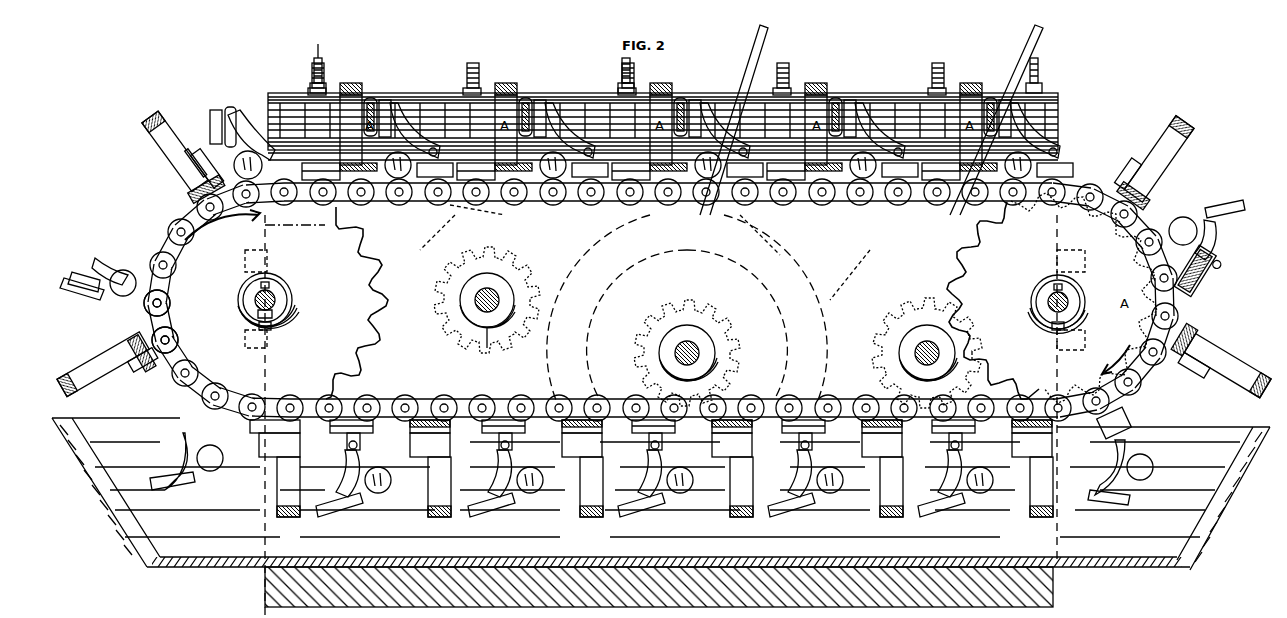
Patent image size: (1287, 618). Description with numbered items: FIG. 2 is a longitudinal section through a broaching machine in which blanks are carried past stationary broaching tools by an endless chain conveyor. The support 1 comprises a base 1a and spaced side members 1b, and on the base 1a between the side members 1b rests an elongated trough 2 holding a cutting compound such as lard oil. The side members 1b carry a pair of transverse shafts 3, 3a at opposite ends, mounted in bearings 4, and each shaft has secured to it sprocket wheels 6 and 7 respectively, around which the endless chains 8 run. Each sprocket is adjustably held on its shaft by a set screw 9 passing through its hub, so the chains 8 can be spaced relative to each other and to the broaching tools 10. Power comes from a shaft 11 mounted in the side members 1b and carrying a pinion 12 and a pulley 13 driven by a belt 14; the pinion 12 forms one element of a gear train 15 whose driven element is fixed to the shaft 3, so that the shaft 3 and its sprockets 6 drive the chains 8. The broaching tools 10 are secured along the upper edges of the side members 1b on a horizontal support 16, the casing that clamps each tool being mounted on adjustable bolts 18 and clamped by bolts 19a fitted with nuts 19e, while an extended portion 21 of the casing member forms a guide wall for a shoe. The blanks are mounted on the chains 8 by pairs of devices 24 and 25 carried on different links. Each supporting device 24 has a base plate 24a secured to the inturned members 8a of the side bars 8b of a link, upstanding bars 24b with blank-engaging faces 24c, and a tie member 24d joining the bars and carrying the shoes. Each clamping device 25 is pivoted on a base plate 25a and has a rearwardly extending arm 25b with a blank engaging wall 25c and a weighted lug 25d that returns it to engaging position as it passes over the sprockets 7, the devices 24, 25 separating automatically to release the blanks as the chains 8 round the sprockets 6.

The support 1 is at (596, 590).
The base 1a is at (110, 581).
The side members 1b is at (280, 537).
The trough or receptacle 2 is at (205, 570).
The transverse shaft 3 is at (1040, 306).
The transverse shaft 3a is at (290, 305).
The bearings 4 is at (248, 310).
The sprocket wheels 6 is at (945, 282).
The sprocket wheels 7 is at (358, 278).
The endless chains 8 is at (615, 400).
The inturned members 8a is at (172, 330).
The side bars 8b is at (172, 300).
The set screw 9 is at (270, 332).
The broaching tool 10 is at (440, 110).
The shaft 11 is at (611, 353).
The pinion 12 is at (475, 300).
The power element 13 is at (400, 362).
The belt 14 is at (712, 100).
The gear train 15 is at (565, 258).
The horizontal support 16 is at (470, 210).
The bolts 18 is at (645, 257).
The bolts 19a is at (940, 72).
The nut 19e is at (968, 83).
The extended portion 21 is at (575, 100).
The supporting device 24 is at (165, 165).
The base plate 24a is at (185, 190).
The upstanding bars 24b is at (110, 378).
The faces 24c is at (140, 335).
The tie member 24d is at (158, 108).
The clamping device 25 is at (95, 272).
The base plate 25a is at (120, 245).
The rearwardly extending arm 25b is at (245, 108).
The blank engaging wall 25c is at (215, 125).
The lug 25d is at (240, 155).